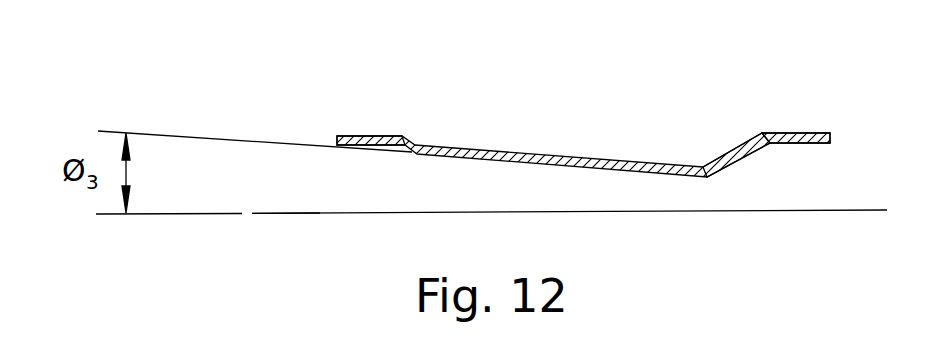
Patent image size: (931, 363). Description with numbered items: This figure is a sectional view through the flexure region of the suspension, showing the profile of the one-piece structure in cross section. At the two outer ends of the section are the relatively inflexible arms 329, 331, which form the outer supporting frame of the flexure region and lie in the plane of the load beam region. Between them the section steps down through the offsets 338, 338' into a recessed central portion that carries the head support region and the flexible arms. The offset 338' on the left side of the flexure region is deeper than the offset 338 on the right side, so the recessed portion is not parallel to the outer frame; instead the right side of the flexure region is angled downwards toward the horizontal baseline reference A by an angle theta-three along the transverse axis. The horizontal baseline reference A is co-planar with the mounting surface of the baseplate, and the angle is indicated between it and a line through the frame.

The relatively inflexible arm 331 is at (370, 137).
The offset 338 is at (585, 119).
The offset 338' is at (717, 118).
The relatively inflexible arm 329 is at (793, 133).
The horizontal baseline reference A is at (282, 213).